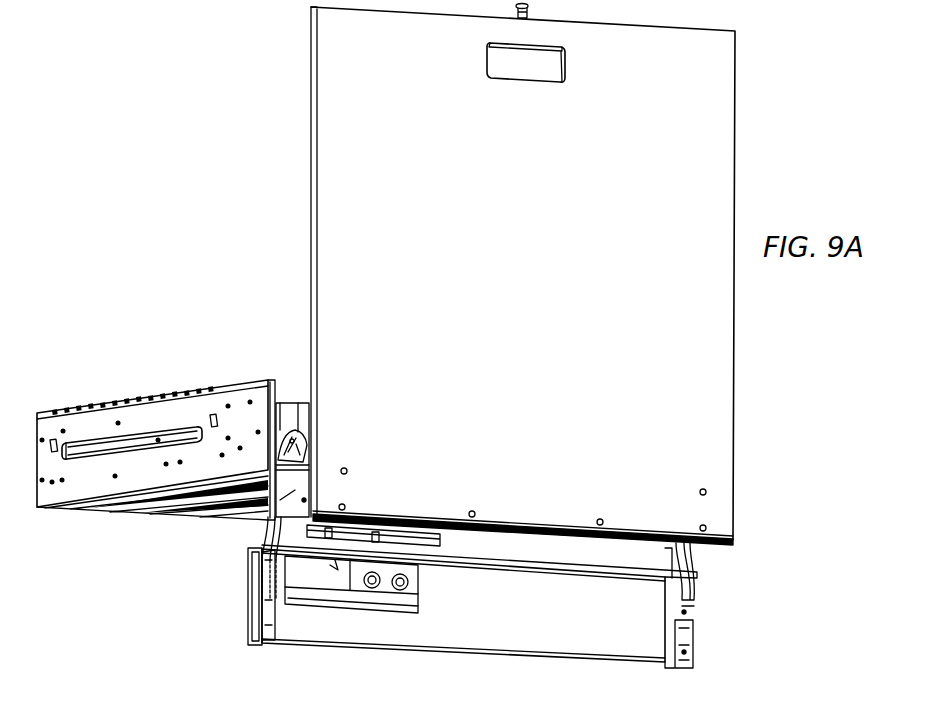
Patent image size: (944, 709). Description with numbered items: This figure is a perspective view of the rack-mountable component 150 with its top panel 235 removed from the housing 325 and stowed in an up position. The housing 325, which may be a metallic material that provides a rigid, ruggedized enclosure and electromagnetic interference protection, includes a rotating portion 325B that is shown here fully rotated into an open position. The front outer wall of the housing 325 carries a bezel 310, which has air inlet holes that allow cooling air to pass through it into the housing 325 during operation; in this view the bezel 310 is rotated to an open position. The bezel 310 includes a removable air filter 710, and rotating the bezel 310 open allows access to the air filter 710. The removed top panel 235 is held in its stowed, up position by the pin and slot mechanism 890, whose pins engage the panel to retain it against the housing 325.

The rack-mountable component 150 is at (222, 110).
The top panel 235 is at (340, 272).
The housing 325 is at (98, 472).
The rotating portion 325B is at (292, 497).
The bezel 310 is at (248, 598).
The removable air filter 710 is at (497, 613).
The pin and slot mechanism 890 is at (700, 528).